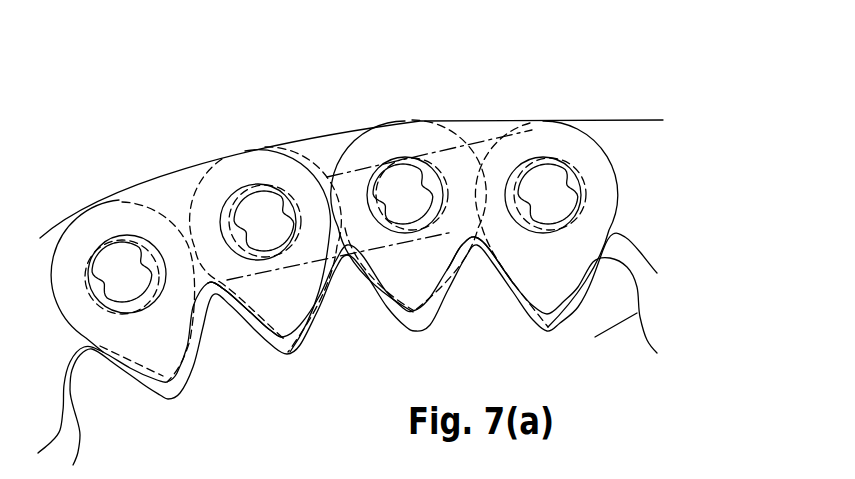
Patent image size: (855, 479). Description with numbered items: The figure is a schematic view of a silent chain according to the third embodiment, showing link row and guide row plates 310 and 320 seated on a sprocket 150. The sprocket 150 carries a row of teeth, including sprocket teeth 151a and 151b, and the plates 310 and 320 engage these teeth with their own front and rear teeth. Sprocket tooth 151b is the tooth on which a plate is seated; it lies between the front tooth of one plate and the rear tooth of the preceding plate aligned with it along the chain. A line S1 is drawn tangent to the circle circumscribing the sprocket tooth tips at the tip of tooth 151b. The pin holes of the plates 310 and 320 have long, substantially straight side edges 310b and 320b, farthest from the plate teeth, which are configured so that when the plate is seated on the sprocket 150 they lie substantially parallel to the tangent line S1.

The sprocket 150 is at (637, 313).
The sprocket tooth 151a is at (477, 270).
The adjacent sprocket tooth 151b is at (261, 143).
The link row plate 310 is at (338, 219).
The guide row plate 320 is at (557, 145).
The side edge of link row plate pin hole 310b is at (363, 182).
The side edge of guide row plate pin hole 320b is at (342, 277).
The tangent line S1 is at (223, 277).